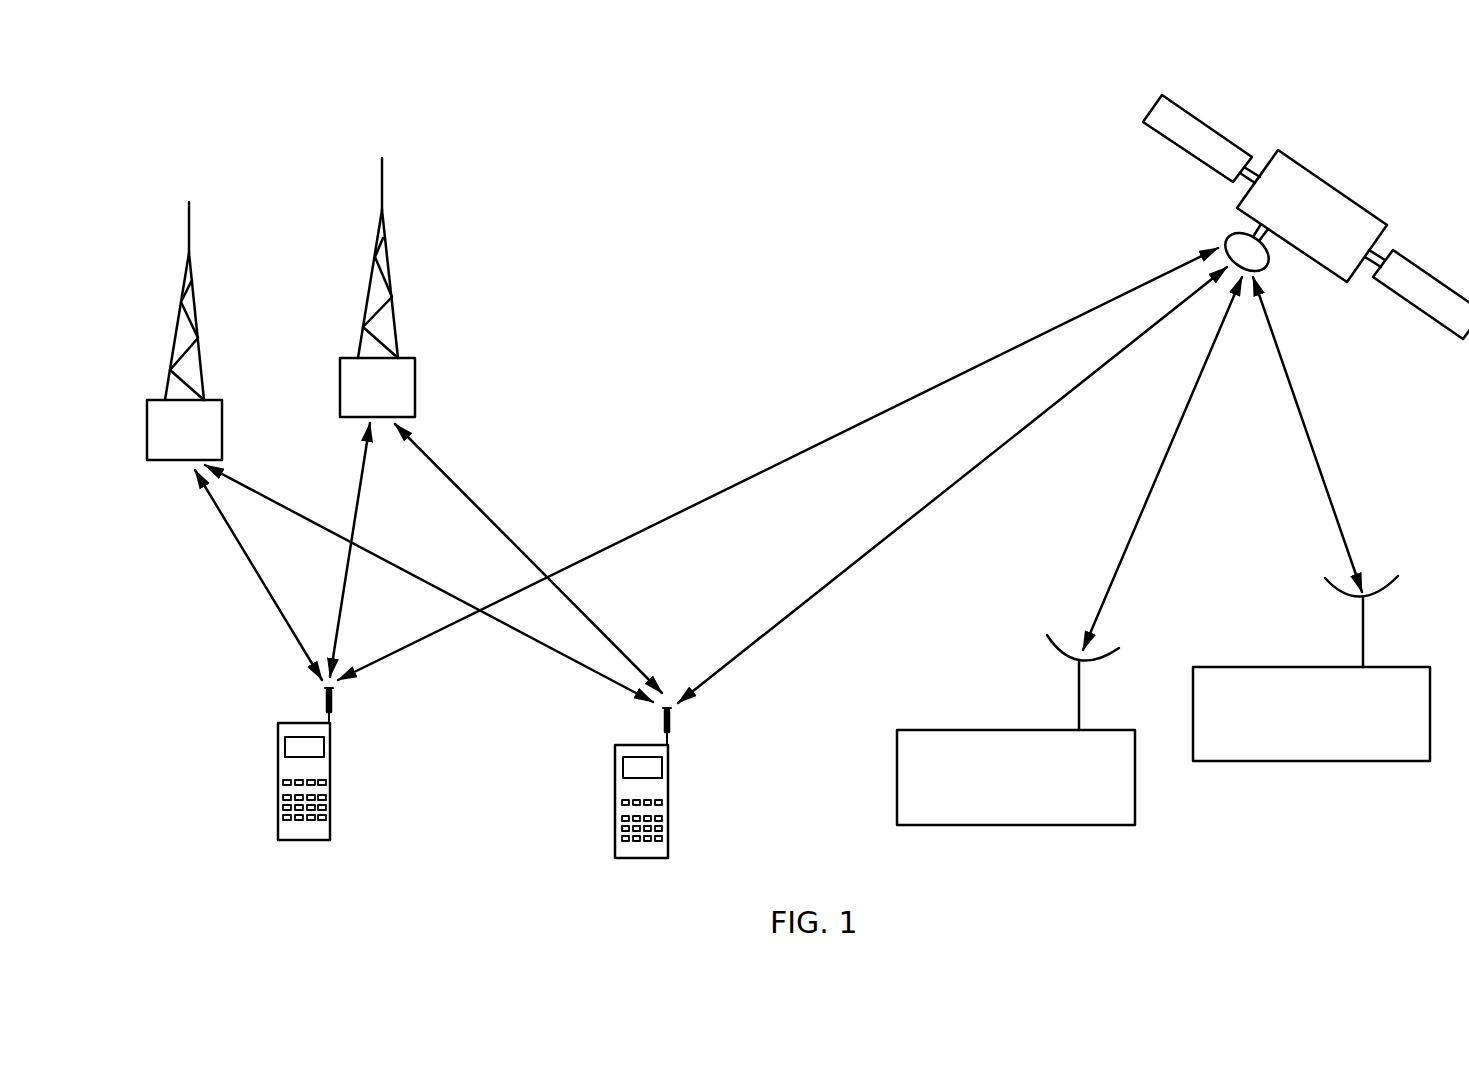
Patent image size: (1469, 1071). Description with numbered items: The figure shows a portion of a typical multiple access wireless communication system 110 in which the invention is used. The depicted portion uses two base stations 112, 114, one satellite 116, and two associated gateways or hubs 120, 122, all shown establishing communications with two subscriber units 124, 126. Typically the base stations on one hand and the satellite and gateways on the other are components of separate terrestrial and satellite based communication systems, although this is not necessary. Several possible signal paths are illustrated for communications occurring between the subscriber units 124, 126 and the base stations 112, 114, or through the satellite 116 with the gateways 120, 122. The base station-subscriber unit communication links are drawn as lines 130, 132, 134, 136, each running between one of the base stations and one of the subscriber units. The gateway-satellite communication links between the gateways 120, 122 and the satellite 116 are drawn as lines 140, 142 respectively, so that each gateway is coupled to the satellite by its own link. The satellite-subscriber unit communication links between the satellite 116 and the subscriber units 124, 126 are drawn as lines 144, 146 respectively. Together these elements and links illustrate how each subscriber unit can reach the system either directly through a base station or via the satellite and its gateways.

The communication system 110 is at (468, 114).
The base station 112 is at (208, 400).
The base station 114 is at (404, 358).
The satellite 116 is at (1413, 260).
The gateway 120 is at (1113, 825).
The gateway 122 is at (1388, 761).
The subscriber unit 124 is at (302, 840).
The subscriber unit 126 is at (640, 858).
The base station-subscriber unit communication link 130 is at (221, 514).
The base station-subscriber unit communication link 132 is at (273, 500).
The base station-subscriber unit communication link 134 is at (360, 488).
The base station-subscriber unit communication link 136 is at (448, 475).
The gateway-satellite communication link 140 is at (1175, 435).
The gateway-satellite communication link 142 is at (1313, 450).
The satellite-subscriber unit communication link 144 is at (907, 402).
The satellite-subscriber unit communication link 146 is at (921, 509).